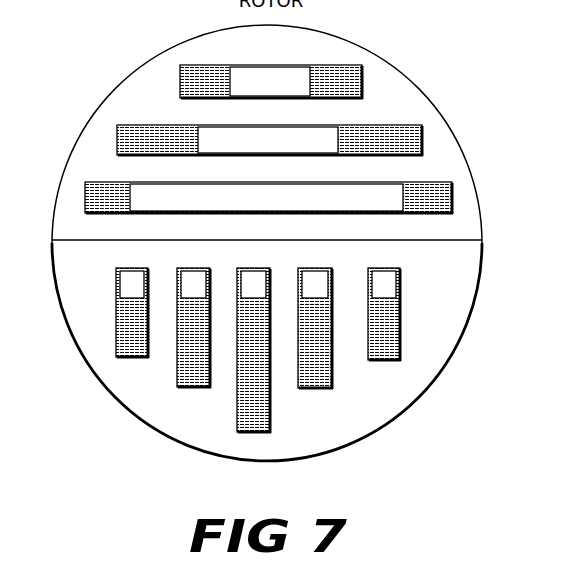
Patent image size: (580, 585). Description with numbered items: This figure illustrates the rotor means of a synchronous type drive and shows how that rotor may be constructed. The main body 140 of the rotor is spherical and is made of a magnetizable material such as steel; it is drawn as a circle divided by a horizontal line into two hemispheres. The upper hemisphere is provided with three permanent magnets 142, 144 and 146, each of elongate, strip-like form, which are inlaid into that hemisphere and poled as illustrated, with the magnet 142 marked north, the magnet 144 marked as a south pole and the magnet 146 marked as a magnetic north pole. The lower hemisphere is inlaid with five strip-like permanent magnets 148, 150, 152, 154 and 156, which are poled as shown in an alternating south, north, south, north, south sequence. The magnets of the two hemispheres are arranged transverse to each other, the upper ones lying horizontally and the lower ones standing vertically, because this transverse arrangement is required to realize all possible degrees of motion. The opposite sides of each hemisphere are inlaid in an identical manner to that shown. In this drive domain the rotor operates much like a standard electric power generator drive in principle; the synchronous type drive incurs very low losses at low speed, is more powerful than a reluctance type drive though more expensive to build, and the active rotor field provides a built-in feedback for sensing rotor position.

The main body 140 is at (122, 88).
The permanent magnet 142 is at (352, 65).
The permanent magnet 144 is at (420, 128).
The permanent magnet 146 is at (445, 182).
The permanent magnet 148 is at (115, 355).
The permanent magnet 150 is at (177, 383).
The permanent magnet 152 is at (237, 430).
The permanent magnet 154 is at (333, 368).
The permanent magnet 156 is at (400, 345).